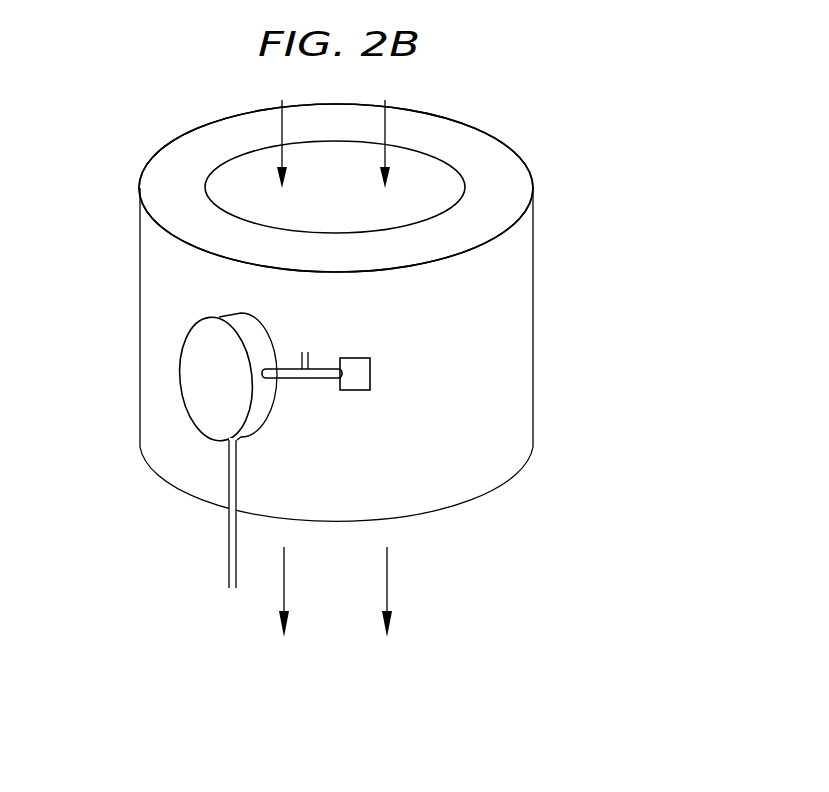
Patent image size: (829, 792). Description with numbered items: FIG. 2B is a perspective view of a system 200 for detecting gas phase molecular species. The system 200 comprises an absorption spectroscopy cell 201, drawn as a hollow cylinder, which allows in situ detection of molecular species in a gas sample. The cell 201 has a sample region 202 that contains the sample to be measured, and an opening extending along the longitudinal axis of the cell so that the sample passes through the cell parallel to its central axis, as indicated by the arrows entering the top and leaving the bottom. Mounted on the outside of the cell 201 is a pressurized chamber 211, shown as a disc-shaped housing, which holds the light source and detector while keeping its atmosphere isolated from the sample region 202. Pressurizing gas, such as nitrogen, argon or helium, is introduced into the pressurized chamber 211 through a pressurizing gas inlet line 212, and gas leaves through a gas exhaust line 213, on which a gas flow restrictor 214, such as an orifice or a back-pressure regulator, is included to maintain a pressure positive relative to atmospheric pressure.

The system 200 is at (508, 124).
The absorption spectroscopy cell 201 is at (186, 151).
The sample region 202 is at (360, 203).
The pressurized chamber 211 is at (180, 375).
The pressurizing gas inlet line 212 is at (229, 546).
The gas exhaust line 213 is at (318, 379).
The gas flow restrictor 214 is at (371, 373).